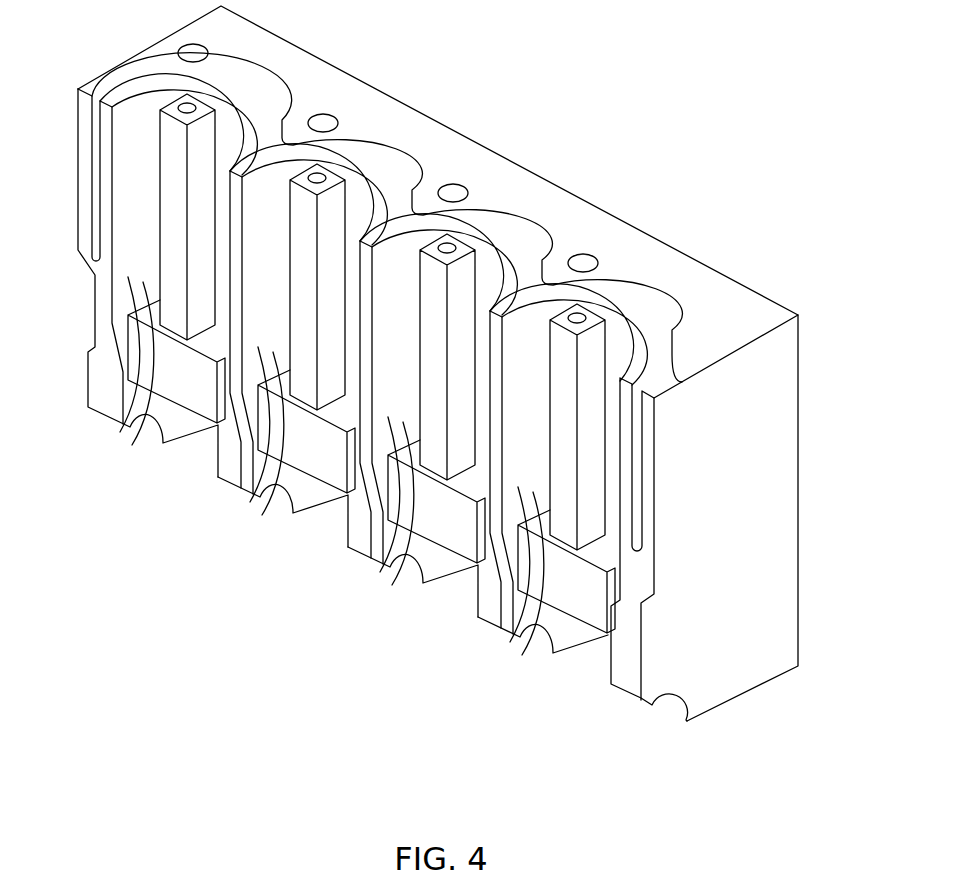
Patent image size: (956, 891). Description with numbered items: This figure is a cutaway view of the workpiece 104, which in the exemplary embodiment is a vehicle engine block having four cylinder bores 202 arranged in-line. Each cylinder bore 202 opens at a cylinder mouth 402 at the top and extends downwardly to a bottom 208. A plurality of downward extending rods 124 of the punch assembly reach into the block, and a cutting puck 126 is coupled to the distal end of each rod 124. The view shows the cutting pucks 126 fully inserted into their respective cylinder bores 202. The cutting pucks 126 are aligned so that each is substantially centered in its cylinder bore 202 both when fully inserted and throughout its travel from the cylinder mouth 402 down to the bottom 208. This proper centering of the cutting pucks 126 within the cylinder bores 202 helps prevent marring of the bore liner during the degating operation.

The workpiece 104 is at (745, 641).
The rod 124 is at (203, 148).
The cutting puck 126 is at (200, 385).
The cylinder bore 202 is at (123, 421).
The bottom 208 is at (140, 440).
The cylinder mouth 402 is at (238, 117).